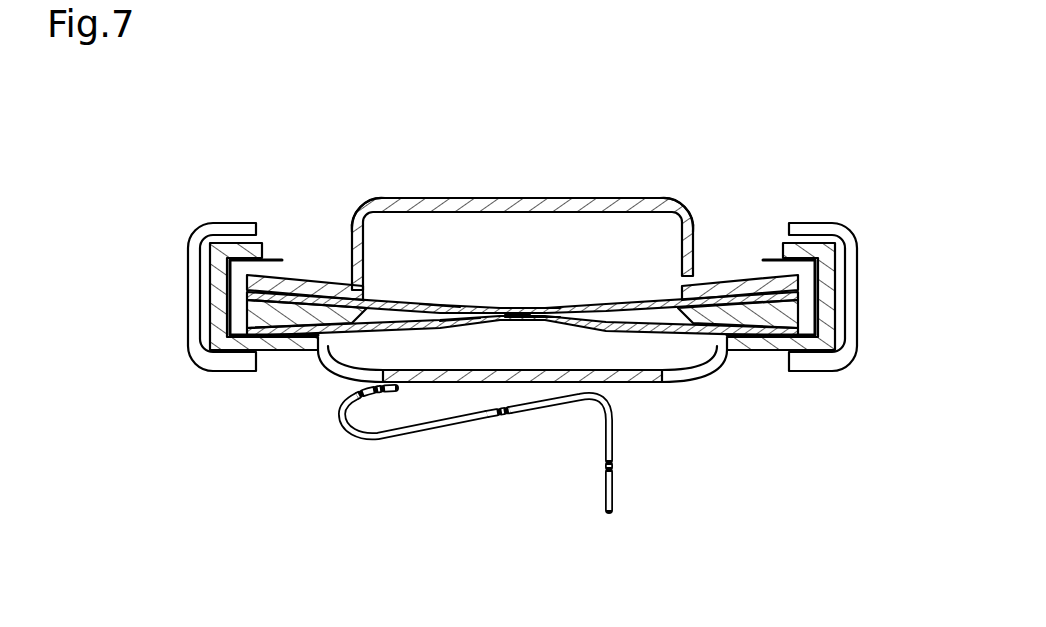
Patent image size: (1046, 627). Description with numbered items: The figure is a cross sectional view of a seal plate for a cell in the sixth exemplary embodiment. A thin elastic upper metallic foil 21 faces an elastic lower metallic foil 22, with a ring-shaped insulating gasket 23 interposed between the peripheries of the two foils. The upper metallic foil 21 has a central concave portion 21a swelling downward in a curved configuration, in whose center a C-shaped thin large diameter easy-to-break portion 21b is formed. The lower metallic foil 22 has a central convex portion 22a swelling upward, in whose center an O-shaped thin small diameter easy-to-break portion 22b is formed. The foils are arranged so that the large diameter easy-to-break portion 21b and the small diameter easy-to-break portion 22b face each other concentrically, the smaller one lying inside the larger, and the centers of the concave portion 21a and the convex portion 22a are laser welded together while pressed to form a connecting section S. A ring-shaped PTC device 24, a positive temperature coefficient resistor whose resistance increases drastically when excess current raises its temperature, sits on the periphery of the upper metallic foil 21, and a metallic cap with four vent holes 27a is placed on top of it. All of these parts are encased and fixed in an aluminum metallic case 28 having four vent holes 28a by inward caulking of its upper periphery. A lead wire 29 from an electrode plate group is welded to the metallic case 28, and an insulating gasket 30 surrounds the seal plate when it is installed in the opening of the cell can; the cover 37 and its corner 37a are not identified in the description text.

The upper metallic foil 21 is at (397, 300).
The concave portion 21a is at (533, 307).
The large diameter easy-to-break portion 21b is at (440, 306).
The lower metallic foil 22 is at (640, 332).
The convex portion 22a is at (527, 322).
The small diameter easy-to-break portion 22b is at (458, 330).
The insulating gasket 23 is at (767, 330).
The PTC device 24 is at (295, 277).
The vent holes 27a is at (365, 228).
The metallic case 28 is at (530, 383).
The vent holes 28a is at (320, 353).
The lead wire 29 is at (447, 432).
The insulating gasket 30 is at (857, 292).
The cover 37 is at (575, 198).
The cover corner portion 37a is at (687, 218).
The connecting section S is at (513, 311).